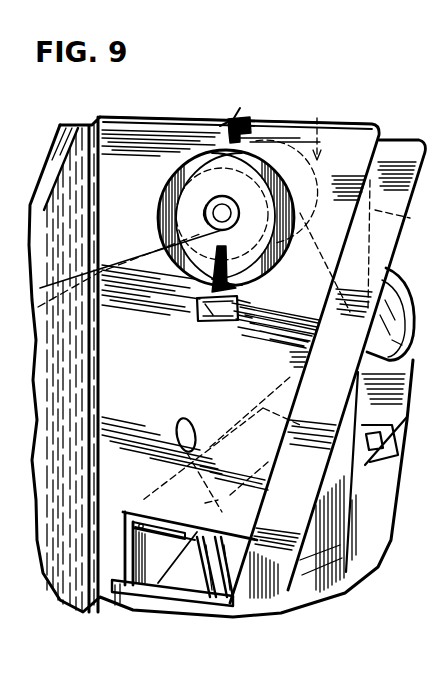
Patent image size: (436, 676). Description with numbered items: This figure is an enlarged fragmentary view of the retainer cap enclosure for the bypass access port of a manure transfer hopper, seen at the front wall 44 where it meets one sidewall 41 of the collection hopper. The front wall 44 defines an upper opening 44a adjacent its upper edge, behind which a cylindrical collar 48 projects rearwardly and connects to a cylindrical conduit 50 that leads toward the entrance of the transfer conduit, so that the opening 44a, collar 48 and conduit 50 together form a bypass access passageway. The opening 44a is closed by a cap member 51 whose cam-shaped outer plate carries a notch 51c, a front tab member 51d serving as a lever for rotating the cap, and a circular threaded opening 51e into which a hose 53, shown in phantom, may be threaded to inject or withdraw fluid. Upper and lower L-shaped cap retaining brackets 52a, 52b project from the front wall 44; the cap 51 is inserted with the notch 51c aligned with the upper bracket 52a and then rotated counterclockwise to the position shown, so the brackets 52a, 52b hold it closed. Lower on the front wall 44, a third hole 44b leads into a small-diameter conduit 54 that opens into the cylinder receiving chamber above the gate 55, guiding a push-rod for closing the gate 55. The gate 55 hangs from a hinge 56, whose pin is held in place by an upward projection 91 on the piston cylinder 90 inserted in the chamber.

The sidewall 41 is at (70, 188).
The front wall 44 is at (340, 156).
The upper opening 44a is at (210, 130).
The third hole 44b is at (180, 424).
The cylindrical collar 48 is at (315, 128).
The cylindrical conduit 50 is at (393, 290).
The cap member 51 is at (197, 272).
The notch 51c is at (177, 173).
The front tab member 51d is at (233, 280).
The circular threaded opening 51e is at (217, 192).
The upper L-shaped cap retaining bracket 52a is at (226, 120).
The lower L-shaped cap retaining bracket 52b is at (210, 311).
The hose 53 is at (138, 250).
The conduit 54 is at (222, 470).
The gate 55 is at (265, 408).
The hinge 56 is at (150, 517).
The piston cylinder 90 is at (95, 614).
The upward projection 91 is at (217, 540).